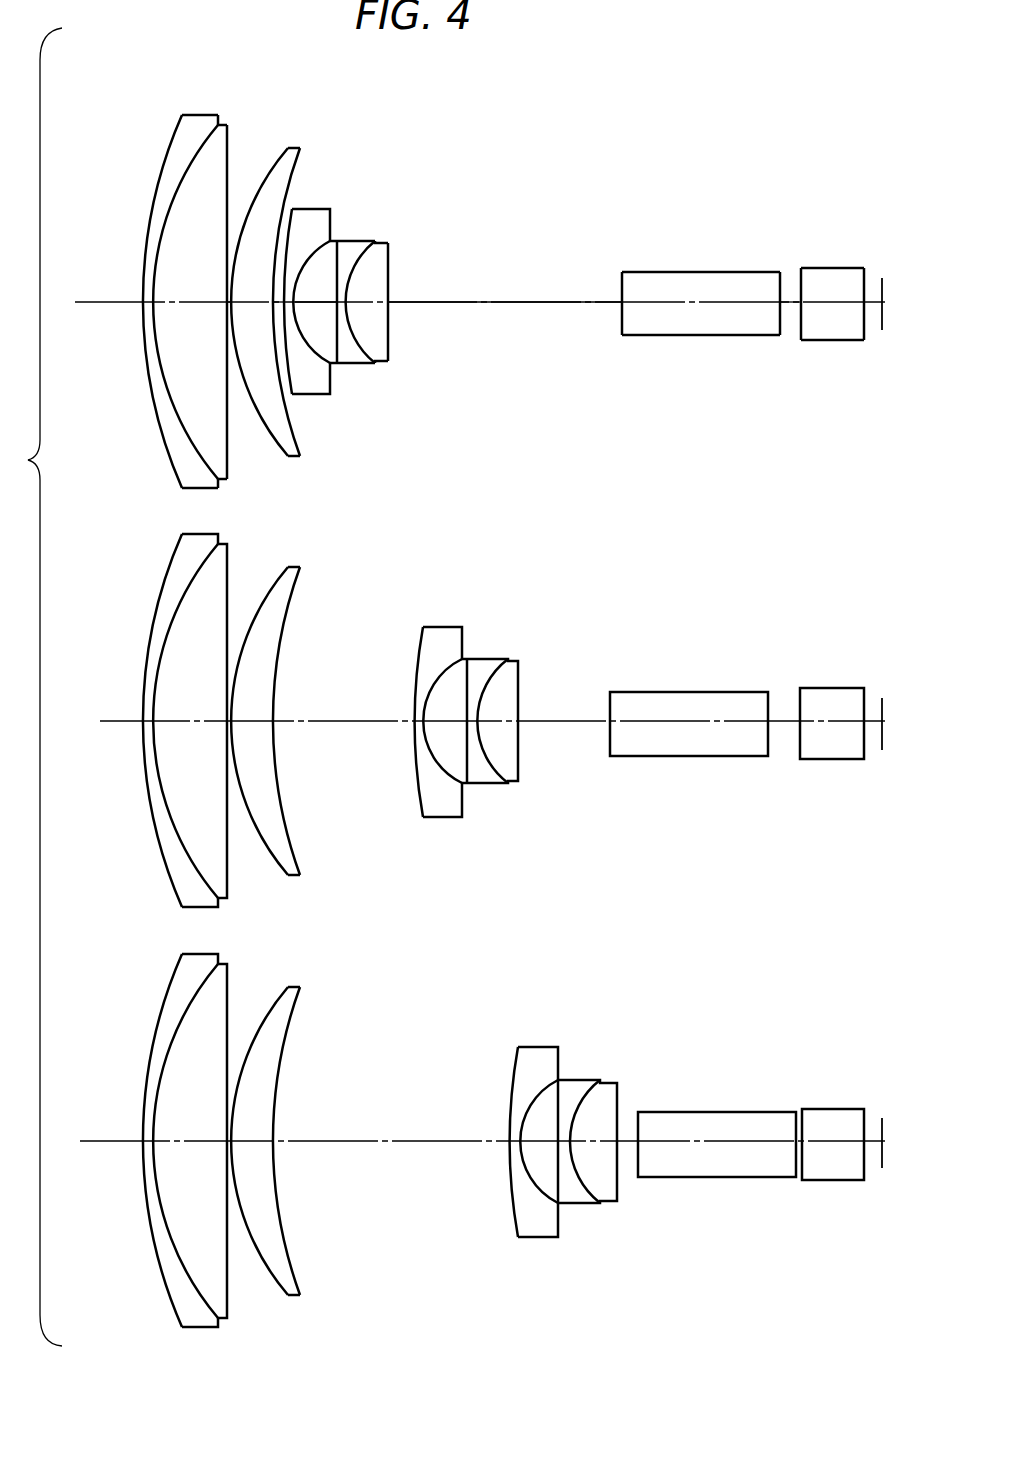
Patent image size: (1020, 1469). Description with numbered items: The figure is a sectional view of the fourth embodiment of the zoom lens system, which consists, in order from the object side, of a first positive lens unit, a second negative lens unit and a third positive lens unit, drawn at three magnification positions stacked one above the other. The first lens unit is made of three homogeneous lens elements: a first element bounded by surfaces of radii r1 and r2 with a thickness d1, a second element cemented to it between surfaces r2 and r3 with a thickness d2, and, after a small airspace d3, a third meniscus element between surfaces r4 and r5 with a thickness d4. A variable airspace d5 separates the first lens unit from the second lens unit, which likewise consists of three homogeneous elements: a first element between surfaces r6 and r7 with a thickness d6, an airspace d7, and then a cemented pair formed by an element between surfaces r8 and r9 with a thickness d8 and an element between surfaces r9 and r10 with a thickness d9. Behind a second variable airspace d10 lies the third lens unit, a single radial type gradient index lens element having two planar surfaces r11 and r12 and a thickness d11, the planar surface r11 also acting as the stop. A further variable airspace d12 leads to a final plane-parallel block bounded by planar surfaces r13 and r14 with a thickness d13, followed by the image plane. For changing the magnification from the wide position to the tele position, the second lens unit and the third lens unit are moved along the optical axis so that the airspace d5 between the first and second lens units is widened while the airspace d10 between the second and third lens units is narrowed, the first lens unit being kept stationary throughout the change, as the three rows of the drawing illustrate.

The radius of curvature of first lens surface r1 is at (163, 157).
The radius of curvature of second lens surface r2 is at (195, 152).
The radius of curvature of third lens surface r3 is at (229, 170).
The radius of curvature of fourth lens surface r4 is at (262, 181).
The radius of curvature of fifth lens surface r5 is at (290, 170).
The radius of curvature of sixth lens surface r6 is at (292, 214).
The radius of curvature of seventh lens surface r7 is at (320, 238).
The radius of curvature of eighth lens surface r8 is at (338, 262).
The radius of curvature of ninth lens surface r9 is at (372, 244).
The radius of curvature of tenth lens surface r10 is at (389, 250).
The radius of curvature of eleventh surface r11 is at (621, 285).
The radius of curvature of twelfth surface r12 is at (779, 282).
The radius of curvature of thirteenth surface r13 is at (802, 278).
The radius of curvature of fourteenth surface r14 is at (864, 282).
The thickness of first lens element d1 is at (148, 325).
The thickness of second lens element d2 is at (191, 305).
The airspace between second and third lens elements d3 is at (228, 293).
The thickness of third lens element d4 is at (250, 305).
The variable airspace between first and second lens units d5 is at (287, 298).
The thickness of fourth lens element d6 is at (294, 318).
The airspace within second lens unit d7 is at (326, 312).
The thickness of fifth lens element d8 is at (348, 308).
The thickness of sixth lens element d9 is at (370, 306).
The variable airspace between second and third lens units d10 is at (498, 304).
The thickness of gradient index lens element d11 is at (686, 305).
The variable airspace after third lens unit d12 is at (790, 305).
The thickness of plane-parallel element d13 is at (837, 305).